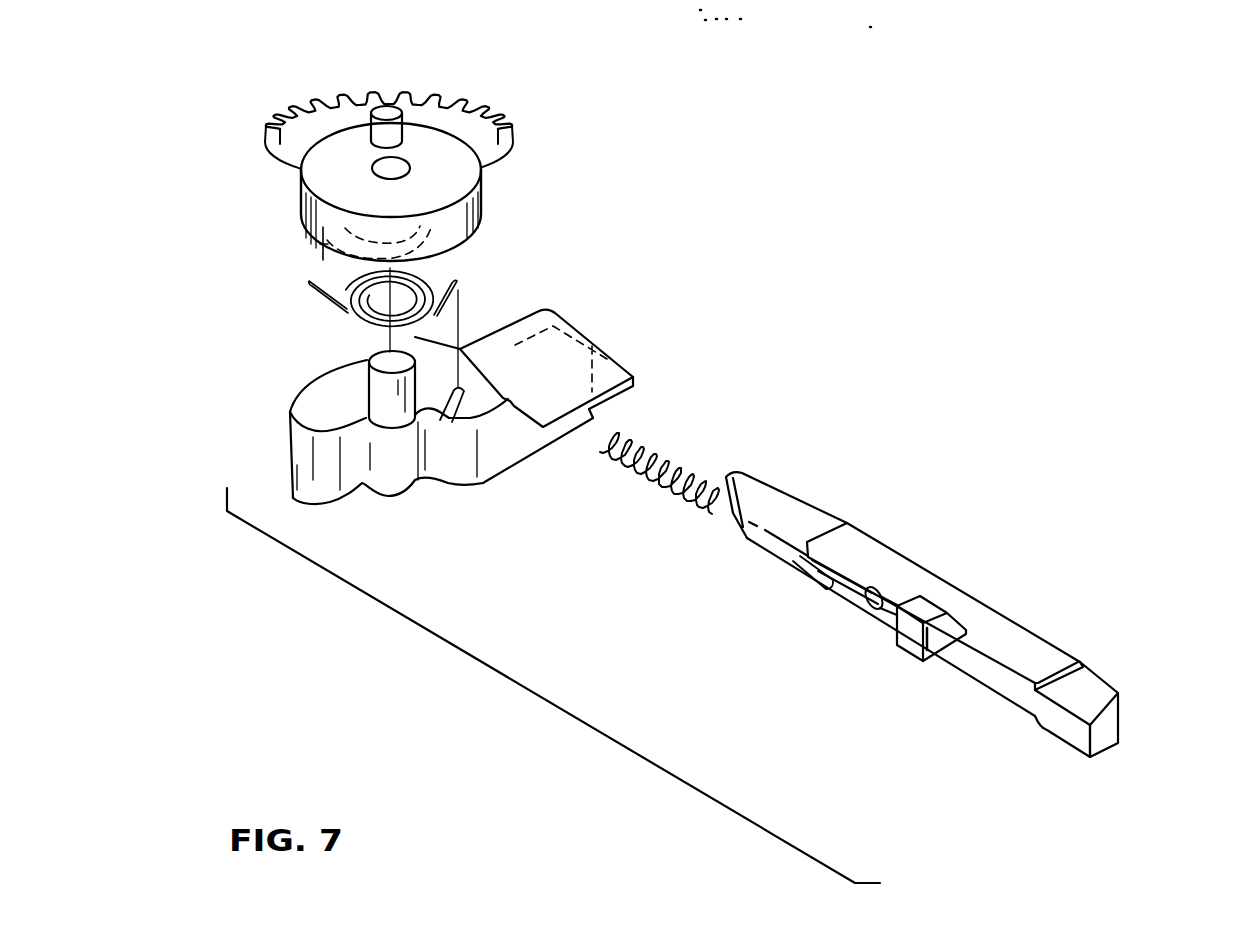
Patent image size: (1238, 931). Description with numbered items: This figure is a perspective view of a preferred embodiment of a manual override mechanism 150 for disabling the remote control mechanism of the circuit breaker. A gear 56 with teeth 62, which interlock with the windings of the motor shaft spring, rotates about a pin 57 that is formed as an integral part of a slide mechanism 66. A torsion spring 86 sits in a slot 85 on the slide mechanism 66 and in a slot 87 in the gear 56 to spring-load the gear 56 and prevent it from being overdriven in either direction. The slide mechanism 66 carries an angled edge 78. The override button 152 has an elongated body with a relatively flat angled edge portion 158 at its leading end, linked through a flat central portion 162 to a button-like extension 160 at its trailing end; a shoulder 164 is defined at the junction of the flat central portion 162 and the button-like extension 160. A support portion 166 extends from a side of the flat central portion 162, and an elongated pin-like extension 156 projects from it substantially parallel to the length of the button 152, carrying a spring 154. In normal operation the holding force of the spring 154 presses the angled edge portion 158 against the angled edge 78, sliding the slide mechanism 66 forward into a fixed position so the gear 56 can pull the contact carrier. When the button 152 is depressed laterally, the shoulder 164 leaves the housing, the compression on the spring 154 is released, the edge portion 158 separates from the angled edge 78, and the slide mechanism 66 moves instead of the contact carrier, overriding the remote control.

The teeth 62 is at (455, 100).
The gear 56 is at (485, 204).
The slot 87 is at (423, 238).
The torsion spring 86 is at (310, 298).
The pin 57 is at (367, 360).
The slide mechanism 66 is at (513, 467).
The angled edge 78 is at (615, 360).
The slot 85 is at (447, 420).
The spring 154 is at (673, 463).
The angled edge portion 158 is at (737, 527).
The elongated pin-like extension 156 is at (873, 610).
The flat central portion 162 is at (917, 570).
The support portion 166 is at (910, 657).
The button-like extension 160 is at (1100, 705).
The shoulder 164 is at (1082, 662).
The override button 152 is at (1107, 752).
The manual override mechanism 150 is at (503, 707).